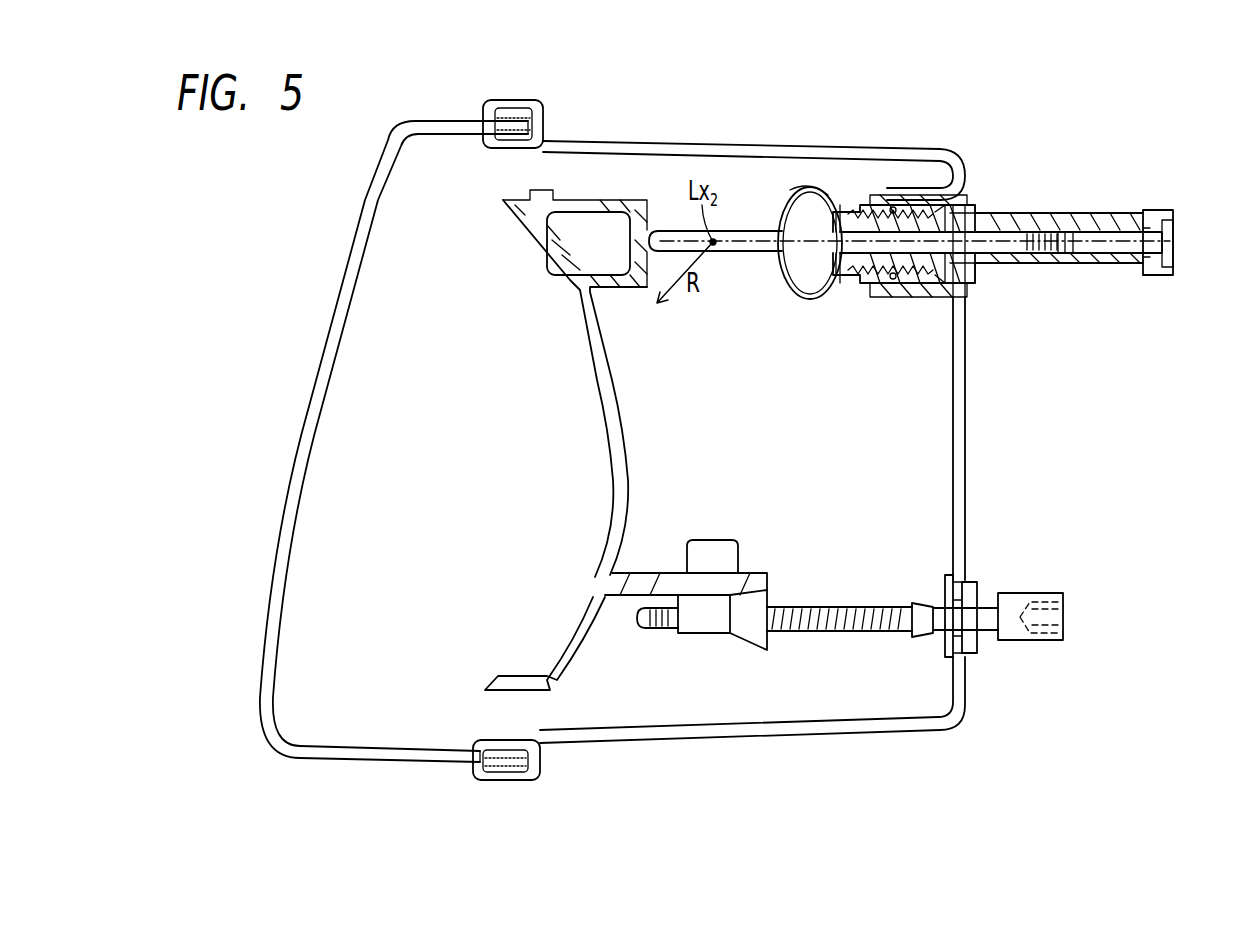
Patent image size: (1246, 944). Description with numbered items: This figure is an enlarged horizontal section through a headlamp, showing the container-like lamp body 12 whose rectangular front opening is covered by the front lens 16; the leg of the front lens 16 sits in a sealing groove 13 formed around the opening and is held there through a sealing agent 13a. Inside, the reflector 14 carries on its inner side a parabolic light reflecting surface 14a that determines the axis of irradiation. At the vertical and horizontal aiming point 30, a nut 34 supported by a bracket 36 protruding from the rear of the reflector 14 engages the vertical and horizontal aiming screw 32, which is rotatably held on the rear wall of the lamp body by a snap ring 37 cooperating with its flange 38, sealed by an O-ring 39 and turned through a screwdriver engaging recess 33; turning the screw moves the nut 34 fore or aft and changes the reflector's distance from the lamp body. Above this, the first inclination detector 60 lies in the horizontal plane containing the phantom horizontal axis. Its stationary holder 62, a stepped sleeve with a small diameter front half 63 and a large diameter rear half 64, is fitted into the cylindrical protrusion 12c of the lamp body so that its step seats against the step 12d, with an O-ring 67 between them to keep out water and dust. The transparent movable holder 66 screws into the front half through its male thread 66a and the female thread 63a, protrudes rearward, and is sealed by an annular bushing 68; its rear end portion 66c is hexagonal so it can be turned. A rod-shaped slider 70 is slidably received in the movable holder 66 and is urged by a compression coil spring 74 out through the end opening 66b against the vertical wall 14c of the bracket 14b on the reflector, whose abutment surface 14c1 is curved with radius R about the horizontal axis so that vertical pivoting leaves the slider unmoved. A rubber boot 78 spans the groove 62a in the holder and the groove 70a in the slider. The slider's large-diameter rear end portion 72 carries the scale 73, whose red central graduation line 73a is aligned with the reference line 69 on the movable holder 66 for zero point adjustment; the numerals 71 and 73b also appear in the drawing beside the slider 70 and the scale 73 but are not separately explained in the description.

The lamp body 12 is at (700, 143).
The cylindrical protrusion 12c is at (955, 320).
The step of the cylindrical protrusion 12d is at (860, 297).
The sealing groove 13 is at (500, 102).
The sealing agent 13a is at (525, 108).
The reflector 14 is at (557, 440).
The light reflecting surface 14a is at (610, 523).
The bracket 14b is at (597, 197).
The vertical wall 14c is at (699, 142).
The abutment surface 14c1 is at (652, 228).
The front lens 16 is at (312, 388).
The vertical and horizontal aiming point 30 is at (689, 676).
The vertical and horizontal aiming screw 32 is at (850, 634).
The screwdriver engaging recess 33 is at (1063, 617).
The nut 34 is at (750, 642).
The bracket 36 is at (643, 572).
The snap ring 37 is at (946, 658).
The flange 38 is at (978, 640).
The O-ring 39 is at (951, 600).
The first inclination detector 60 is at (1164, 64).
The stationary holder 62 is at (879, 184).
The groove 62a is at (904, 244).
The small diameter front half 63 is at (886, 205).
The female thread 63a is at (840, 205).
The large diameter rear half 64 is at (915, 200).
The movable holder 66 is at (1125, 213).
The male thread 66a is at (864, 205).
The end opening 66b is at (800, 282).
The rear end portion 66c is at (1160, 210).
The O-ring 67 is at (893, 298).
The annular bushing 68 is at (963, 200).
The reference line 69 is at (1062, 215).
The slider 70 is at (898, 316).
The groove 70a is at (766, 200).
The ball joint portion 71 is at (918, 285).
The large-diameter rear end portion 72 is at (1035, 263).
The scale 73 is at (1001, 127).
The red central graduation line 73a is at (1040, 232).
The rod portion 73b is at (1030, 232).
The compression coil spring 74 is at (1125, 263).
The rubber boot 78 is at (797, 190).